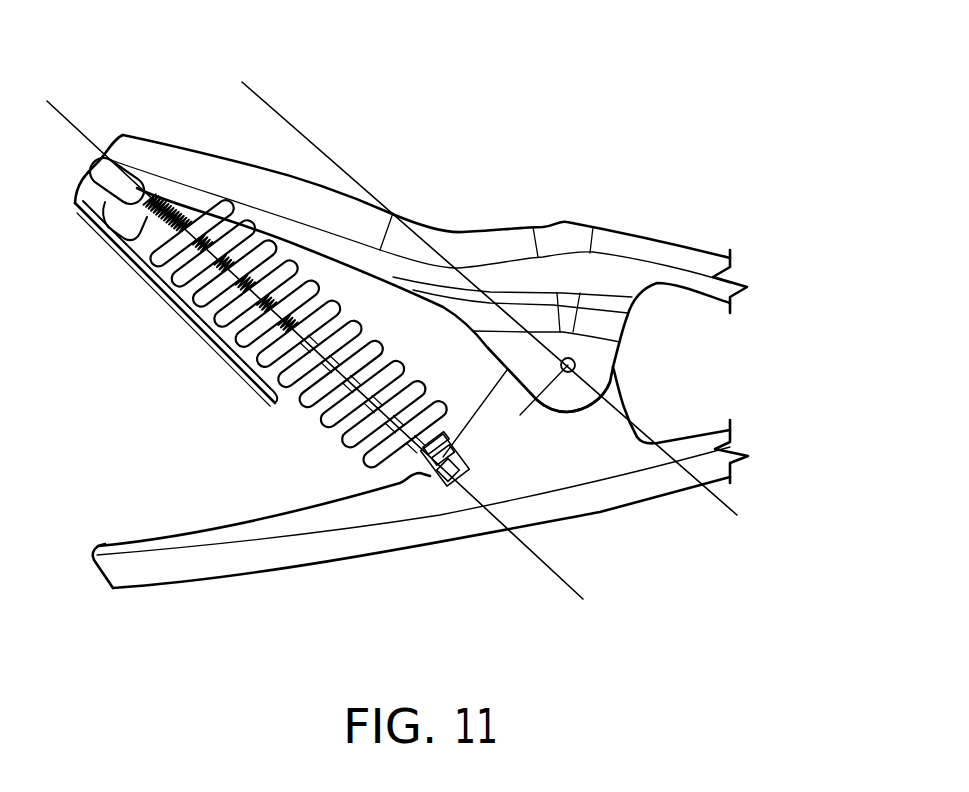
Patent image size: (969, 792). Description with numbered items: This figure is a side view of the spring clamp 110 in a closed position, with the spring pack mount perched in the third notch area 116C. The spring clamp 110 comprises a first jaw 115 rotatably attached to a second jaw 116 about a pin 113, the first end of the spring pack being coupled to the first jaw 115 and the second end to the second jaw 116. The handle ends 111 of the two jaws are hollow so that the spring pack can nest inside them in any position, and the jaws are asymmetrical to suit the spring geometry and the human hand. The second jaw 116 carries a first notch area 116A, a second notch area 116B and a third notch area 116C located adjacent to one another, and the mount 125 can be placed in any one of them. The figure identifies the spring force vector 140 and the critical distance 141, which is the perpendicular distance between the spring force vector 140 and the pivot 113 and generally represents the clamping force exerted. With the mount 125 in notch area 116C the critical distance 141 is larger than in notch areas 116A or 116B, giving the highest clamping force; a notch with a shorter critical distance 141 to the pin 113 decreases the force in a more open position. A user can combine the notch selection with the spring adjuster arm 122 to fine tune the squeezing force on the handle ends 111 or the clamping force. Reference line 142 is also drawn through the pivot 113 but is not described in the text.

The spring clamp 110 is at (560, 98).
The handle ends 111 is at (86, 154).
The pin 113 is at (582, 362).
The first jaw 115 is at (624, 229).
The second jaw 116 is at (270, 573).
The first notch area 116A is at (457, 435).
The second notch area 116B is at (453, 453).
The third notch area 116C is at (455, 473).
The spring adjuster arm 122 is at (176, 305).
The mount 125 is at (434, 487).
The spring force vector 140 is at (567, 586).
The critical distance 141 is at (532, 417).
The pivot axis line 142 is at (733, 503).